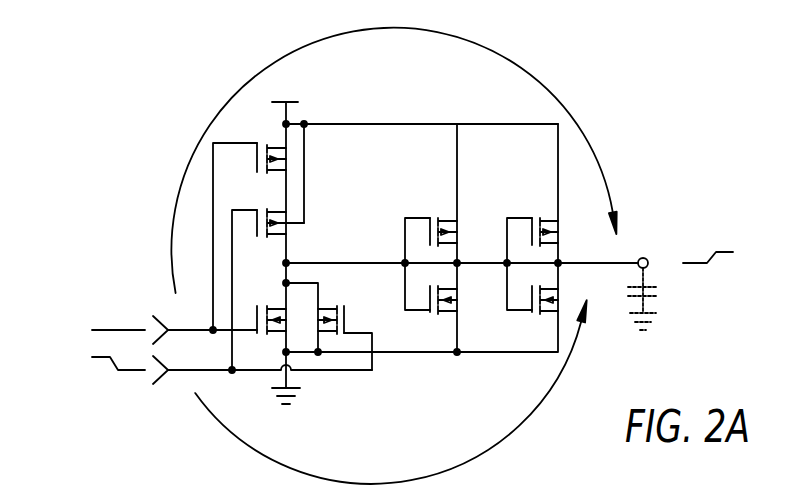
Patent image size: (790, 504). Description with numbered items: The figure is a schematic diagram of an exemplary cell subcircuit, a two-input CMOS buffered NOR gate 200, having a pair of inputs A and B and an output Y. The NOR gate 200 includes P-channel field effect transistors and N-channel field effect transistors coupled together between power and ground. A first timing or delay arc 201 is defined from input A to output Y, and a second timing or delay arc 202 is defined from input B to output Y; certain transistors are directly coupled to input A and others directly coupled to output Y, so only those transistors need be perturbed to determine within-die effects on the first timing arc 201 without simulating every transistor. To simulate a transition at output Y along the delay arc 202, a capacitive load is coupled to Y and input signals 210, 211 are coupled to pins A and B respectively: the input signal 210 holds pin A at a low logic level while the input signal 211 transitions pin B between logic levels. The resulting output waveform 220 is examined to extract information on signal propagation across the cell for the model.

The buffered NOR gate 200 is at (644, 121).
The first timing arc 201 is at (327, 37).
The second timing arc 202 is at (513, 432).
The input signal 210 is at (123, 330).
The input signal 211 is at (132, 370).
The output waveform 220 is at (724, 251).